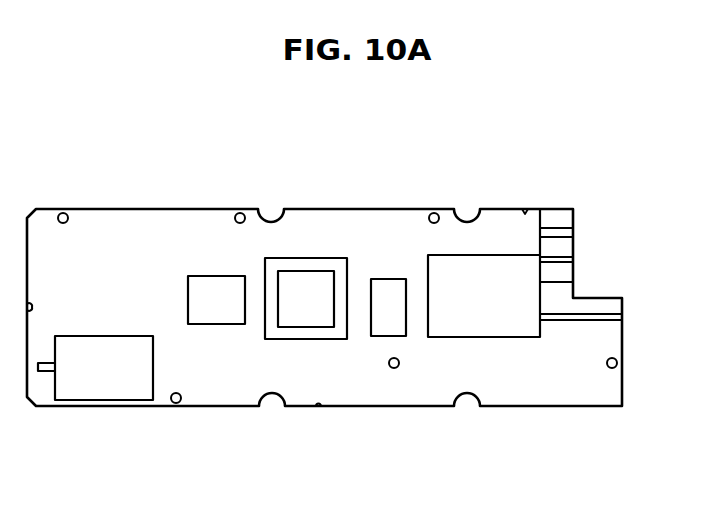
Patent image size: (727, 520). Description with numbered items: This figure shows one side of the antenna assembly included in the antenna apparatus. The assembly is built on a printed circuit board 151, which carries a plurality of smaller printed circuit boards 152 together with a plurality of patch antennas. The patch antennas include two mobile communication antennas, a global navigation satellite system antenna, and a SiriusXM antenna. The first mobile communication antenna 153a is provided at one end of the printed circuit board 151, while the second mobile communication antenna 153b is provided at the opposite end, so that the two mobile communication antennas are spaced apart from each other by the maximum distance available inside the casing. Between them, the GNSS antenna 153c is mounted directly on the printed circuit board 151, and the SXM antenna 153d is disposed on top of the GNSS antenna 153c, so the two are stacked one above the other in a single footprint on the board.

The printed circuit board 151 is at (612, 345).
The printed circuit boards 152 is at (219, 276).
The first mobile communication antenna 153a is at (101, 390).
The second mobile communication antenna 153b is at (498, 262).
The GNSS antenna 153c is at (342, 267).
The SXM antenna 153d is at (291, 286).